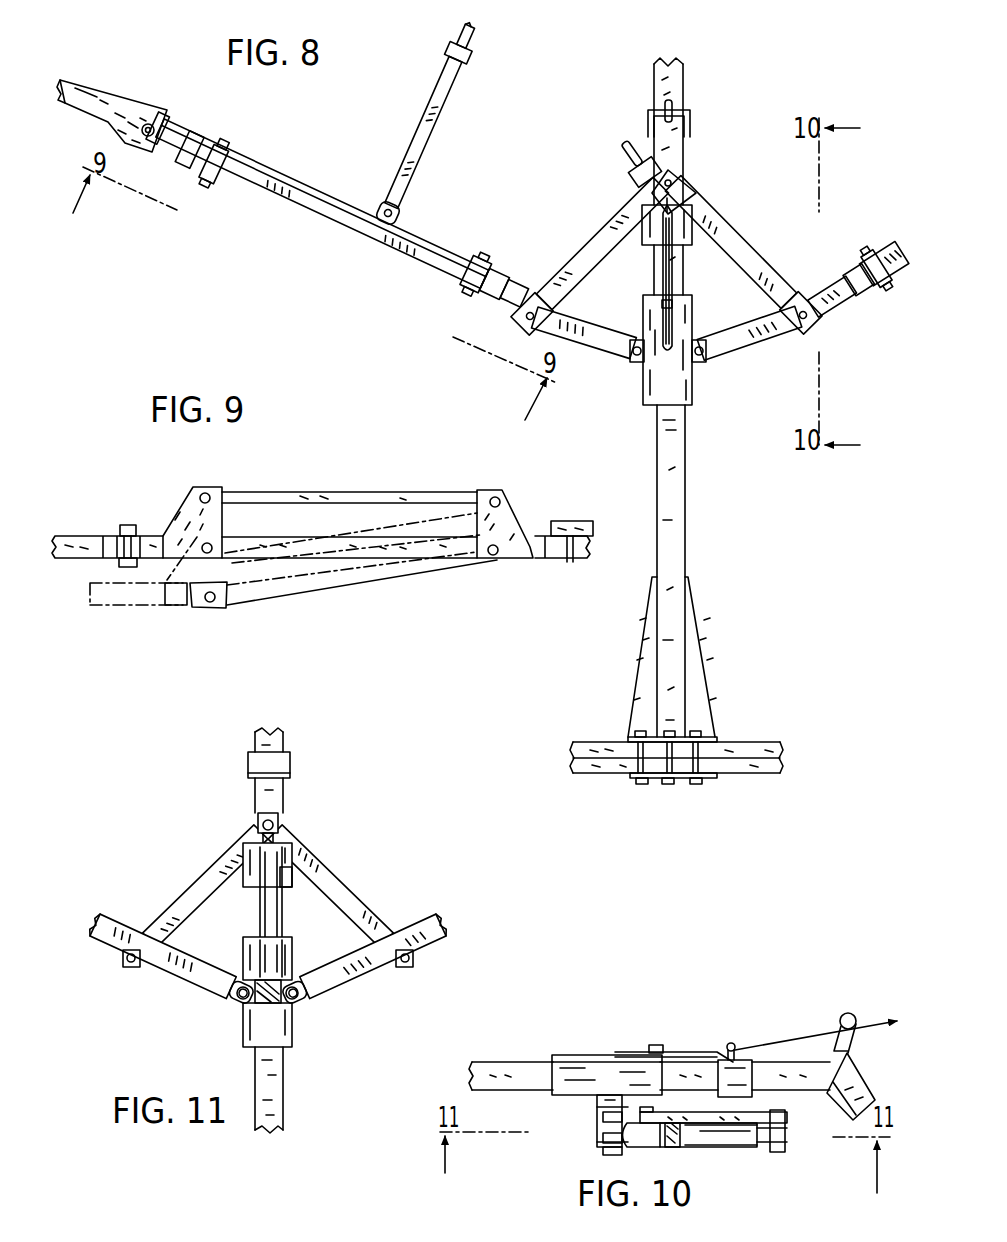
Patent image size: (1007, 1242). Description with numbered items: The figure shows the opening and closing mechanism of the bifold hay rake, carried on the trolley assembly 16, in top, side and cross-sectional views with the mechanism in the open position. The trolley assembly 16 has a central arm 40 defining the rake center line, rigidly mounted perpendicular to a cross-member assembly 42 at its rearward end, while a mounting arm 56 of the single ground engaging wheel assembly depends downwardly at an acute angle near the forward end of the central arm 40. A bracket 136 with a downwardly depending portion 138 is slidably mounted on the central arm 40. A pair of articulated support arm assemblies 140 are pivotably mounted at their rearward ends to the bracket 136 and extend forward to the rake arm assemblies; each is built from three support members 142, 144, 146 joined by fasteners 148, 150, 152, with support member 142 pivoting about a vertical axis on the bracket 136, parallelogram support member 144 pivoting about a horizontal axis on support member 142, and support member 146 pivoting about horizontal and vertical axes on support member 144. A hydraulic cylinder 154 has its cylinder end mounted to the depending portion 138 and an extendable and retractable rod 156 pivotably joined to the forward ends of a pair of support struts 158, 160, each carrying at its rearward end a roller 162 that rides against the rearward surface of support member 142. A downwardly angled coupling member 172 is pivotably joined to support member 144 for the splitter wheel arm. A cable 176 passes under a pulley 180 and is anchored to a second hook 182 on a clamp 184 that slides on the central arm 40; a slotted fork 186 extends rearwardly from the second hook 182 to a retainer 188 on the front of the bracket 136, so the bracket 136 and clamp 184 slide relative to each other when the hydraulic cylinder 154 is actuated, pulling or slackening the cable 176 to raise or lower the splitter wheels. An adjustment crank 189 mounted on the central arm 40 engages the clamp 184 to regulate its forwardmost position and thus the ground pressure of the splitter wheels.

In FIG. 8, the trolley assembly 16 is at (742, 722).
In FIG. 8, the central arm 40 is at (678, 558).
In FIG. 11, the central arm 40 is at (277, 1087).
In FIG. 10, the central arm 40 is at (530, 1062).
In FIG. 8, the cross-member assembly 42 is at (755, 784).
In FIG. 10, the mounting arm 56 is at (873, 1093).
In FIG. 8, the bracket 136 is at (690, 393).
In FIG. 11, the bracket 136 is at (293, 1038).
In FIG. 10, the bracket 136 is at (590, 1070).
In FIG. 11, the downwardly depending portion 138 is at (253, 1003).
In FIG. 10, the downwardly depending portion 138 is at (597, 1112).
In FIG. 8, the articulated support arm assembly 140 is at (308, 176).
In FIG. 9, the articulated support arm assembly 140 is at (333, 490).
In FIG. 11, the articulated support arm assembly 140 is at (443, 940).
In FIG. 8, the support member 142 is at (587, 340).
In FIG. 9, the support member 142 is at (572, 563).
In FIG. 11, the support member 142 is at (137, 920).
In FIG. 8, the parallelogram support member 144 is at (423, 265).
In FIG. 9, the parallelogram support member 144 is at (440, 492).
In FIG. 8, the support member 146 is at (112, 97).
In FIG. 8, the fastener 148 is at (482, 259).
In FIG. 8, the fastener 150 is at (213, 143).
In FIG. 9, the fastener 150 is at (215, 535).
In FIG. 8, the fastener 152 is at (157, 148).
In FIG. 9, the fastener 152 is at (152, 500).
In FIG. 11, the hydraulic cylinder 154 is at (282, 923).
In FIG. 10, the hydraulic cylinder 154 is at (723, 1138).
In FIG. 11, the extendable and retractable rod 156 is at (277, 838).
In FIG. 8, the support strut 158 is at (587, 250).
In FIG. 11, the support strut 158 is at (212, 870).
In FIG. 8, the support strut 160 is at (740, 247).
In FIG. 11, the support strut 160 is at (365, 905).
In FIG. 11, the roller 162 is at (140, 967).
In FIG. 8, the coupling member 172 is at (432, 135).
In FIG. 10, the cable 176 is at (802, 1037).
In FIG. 10, the pulley 180 is at (848, 1013).
In FIG. 10, the second hook 182 is at (727, 1043).
In FIG. 8, the clamp 184 is at (677, 207).
In FIG. 11, the clamp 184 is at (293, 867).
In FIG. 10, the clamp 184 is at (737, 1073).
In FIG. 10, the slotted fork 186 is at (680, 1052).
In FIG. 10, the retainer 188 is at (650, 1043).
In FIG. 8, the adjustment crank 189 is at (633, 160).